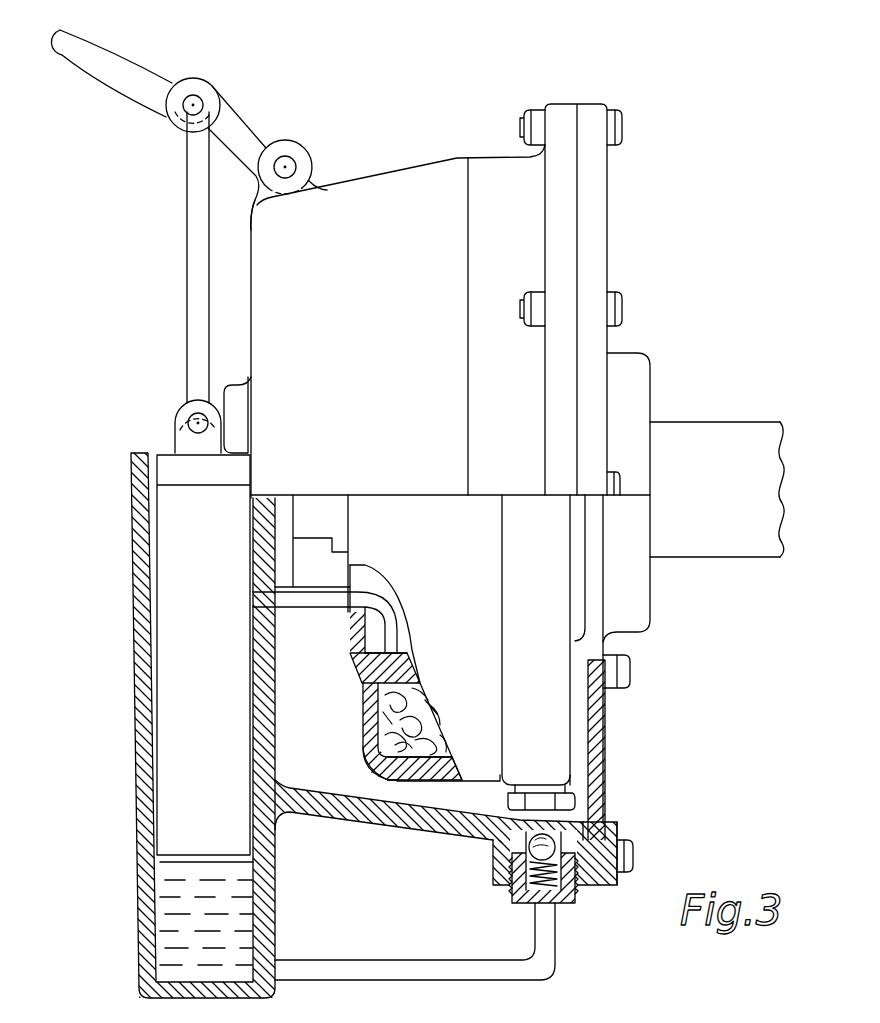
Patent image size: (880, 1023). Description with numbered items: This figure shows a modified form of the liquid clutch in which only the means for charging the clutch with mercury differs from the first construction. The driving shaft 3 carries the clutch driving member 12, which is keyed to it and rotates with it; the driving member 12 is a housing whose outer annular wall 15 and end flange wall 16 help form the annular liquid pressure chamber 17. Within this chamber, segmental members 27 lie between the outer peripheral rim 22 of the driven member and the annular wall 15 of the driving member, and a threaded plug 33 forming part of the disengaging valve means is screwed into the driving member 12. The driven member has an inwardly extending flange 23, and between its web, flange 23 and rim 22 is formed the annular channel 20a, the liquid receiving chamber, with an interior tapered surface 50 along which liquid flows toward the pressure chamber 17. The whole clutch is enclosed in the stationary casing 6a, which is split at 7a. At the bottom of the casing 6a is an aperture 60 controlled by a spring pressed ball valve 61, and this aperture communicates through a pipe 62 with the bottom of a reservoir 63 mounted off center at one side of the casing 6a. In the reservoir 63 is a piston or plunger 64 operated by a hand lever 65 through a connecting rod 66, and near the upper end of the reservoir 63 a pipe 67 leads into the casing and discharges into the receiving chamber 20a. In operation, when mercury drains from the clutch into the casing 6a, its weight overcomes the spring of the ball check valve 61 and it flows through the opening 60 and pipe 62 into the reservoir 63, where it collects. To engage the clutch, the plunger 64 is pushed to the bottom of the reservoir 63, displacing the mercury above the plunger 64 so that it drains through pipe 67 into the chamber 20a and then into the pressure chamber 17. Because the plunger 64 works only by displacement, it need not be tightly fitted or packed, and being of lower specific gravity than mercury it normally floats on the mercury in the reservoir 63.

The hand lever 65 is at (117, 72).
The connecting rod 66 is at (191, 267).
The piston or plunger 64 is at (176, 657).
The reservoir 63 is at (146, 940).
The pipe 67 is at (317, 603).
The inwardly extending flange 23 is at (377, 641).
The annular channel 20a is at (377, 642).
The interior tapered surface 50 is at (377, 673).
The outer peripheral rim 22 is at (377, 688).
The end flange wall 16 is at (375, 728).
The annular liquid drive or pressure chamber 17 is at (375, 762).
The segmental members 27 is at (402, 747).
The outer annular wall 15 is at (425, 771).
The plug 33 is at (509, 803).
The clutch driving member 12 is at (578, 703).
The clutch casing 6a is at (618, 768).
The driving shaft 3 is at (738, 433).
The aperture 60 is at (505, 845).
The spring pressed ball valve 61 is at (520, 868).
The pipe 62 is at (442, 962).
The split 7a is at (588, 883).